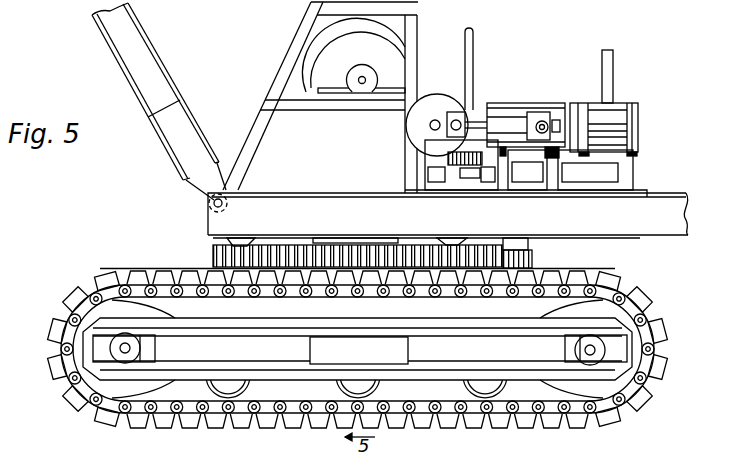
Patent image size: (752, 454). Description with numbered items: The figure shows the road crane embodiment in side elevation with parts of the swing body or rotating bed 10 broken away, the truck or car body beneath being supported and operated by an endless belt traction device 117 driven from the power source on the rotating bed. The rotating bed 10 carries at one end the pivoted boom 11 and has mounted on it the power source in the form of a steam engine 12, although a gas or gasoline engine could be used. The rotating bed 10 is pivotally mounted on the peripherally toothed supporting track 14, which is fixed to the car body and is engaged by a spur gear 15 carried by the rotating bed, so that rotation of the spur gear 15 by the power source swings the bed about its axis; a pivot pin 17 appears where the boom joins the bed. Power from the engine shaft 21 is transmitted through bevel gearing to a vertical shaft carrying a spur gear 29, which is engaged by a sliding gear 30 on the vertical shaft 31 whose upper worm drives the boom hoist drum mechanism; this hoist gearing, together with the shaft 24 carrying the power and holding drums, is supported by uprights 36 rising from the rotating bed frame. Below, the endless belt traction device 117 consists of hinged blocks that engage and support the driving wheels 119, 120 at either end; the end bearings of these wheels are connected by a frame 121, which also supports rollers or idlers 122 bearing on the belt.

The swing body or rotating bed 10 is at (668, 220).
The pivoted boom 11 is at (122, 50).
The steam engine 12 is at (620, 118).
The supporting track 14 is at (214, 255).
The spur gear 15 is at (532, 262).
The pivot pin 17 is at (238, 246).
The engine shaft 21 is at (436, 119).
The shaft 24 is at (360, 83).
The spur gear 29 is at (415, 135).
The sliding gear 30 is at (477, 178).
The vertical shaft 31 is at (473, 42).
The uprights 36 is at (418, 25).
The endless belt traction device 117 is at (665, 325).
The driving wheel 119 is at (132, 393).
The driving wheel 120 is at (612, 406).
The frame 121 is at (464, 383).
The rollers or idlers 122 is at (336, 384).